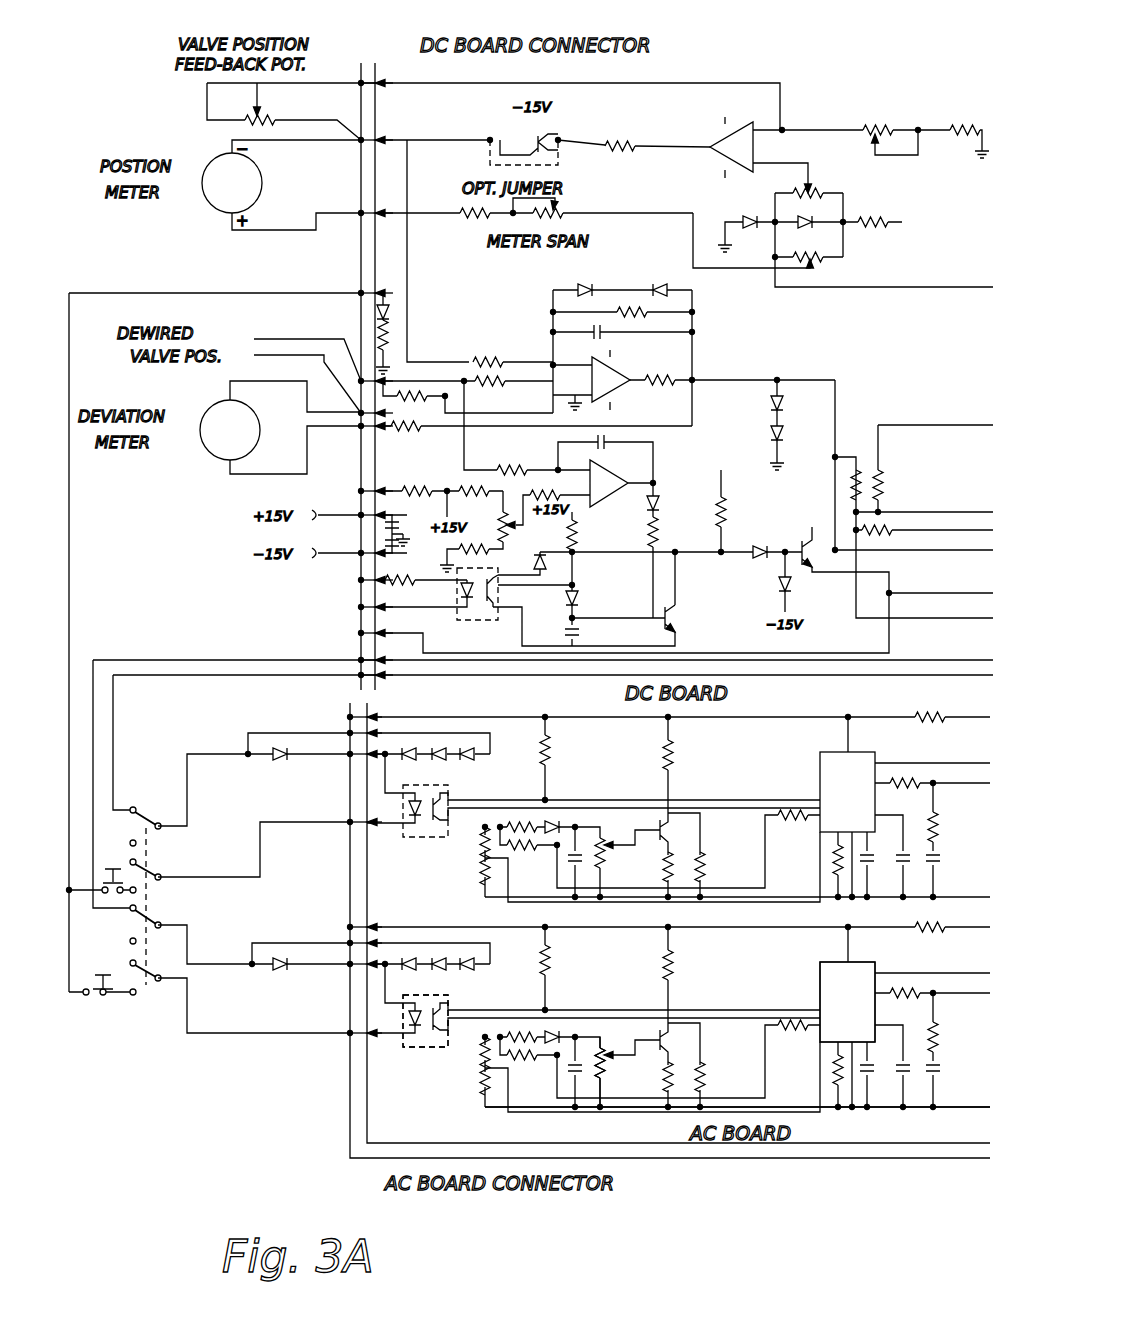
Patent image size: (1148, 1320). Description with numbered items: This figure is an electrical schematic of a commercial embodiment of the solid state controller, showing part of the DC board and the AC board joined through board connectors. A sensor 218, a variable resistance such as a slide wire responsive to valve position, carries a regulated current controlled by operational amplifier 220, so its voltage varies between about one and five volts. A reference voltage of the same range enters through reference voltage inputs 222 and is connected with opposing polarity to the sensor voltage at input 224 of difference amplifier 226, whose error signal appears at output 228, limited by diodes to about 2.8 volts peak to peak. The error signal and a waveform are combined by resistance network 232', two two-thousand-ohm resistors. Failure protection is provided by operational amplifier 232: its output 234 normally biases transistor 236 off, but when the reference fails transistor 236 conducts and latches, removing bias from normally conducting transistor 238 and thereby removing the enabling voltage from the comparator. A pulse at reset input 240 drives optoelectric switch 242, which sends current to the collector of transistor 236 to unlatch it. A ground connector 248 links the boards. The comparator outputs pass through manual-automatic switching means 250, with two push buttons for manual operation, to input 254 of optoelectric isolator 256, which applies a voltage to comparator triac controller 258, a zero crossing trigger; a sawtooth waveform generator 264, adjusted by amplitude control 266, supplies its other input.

The sensor 218 is at (263, 102).
The operational amplifier 220 is at (773, 84).
The reference voltage inputs 222 is at (263, 327).
The input of difference amplifier 224 is at (537, 358).
The difference amplifier 226 is at (630, 378).
The output of difference amplifier 228 is at (814, 380).
The operational amplifier 232 is at (658, 460).
The resistance network 232' is at (925, 452).
The output of operational amplifier 234 is at (650, 531).
The transistor 236 is at (680, 617).
The transistor 238 is at (782, 530).
The reset input 240 is at (338, 595).
The optoelectric switch 242 is at (455, 611).
The ground connector 248 is at (72, 503).
The manual-automatic switching means 250 is at (128, 1046).
The input of optoelectric isolator 254 is at (283, 976).
The optoelectric isolator 256 is at (401, 1052).
The comparator triac controller 258 is at (818, 977).
The sawtooth waveform generator 264 is at (666, 1135).
The amplitude control 266 is at (603, 1040).